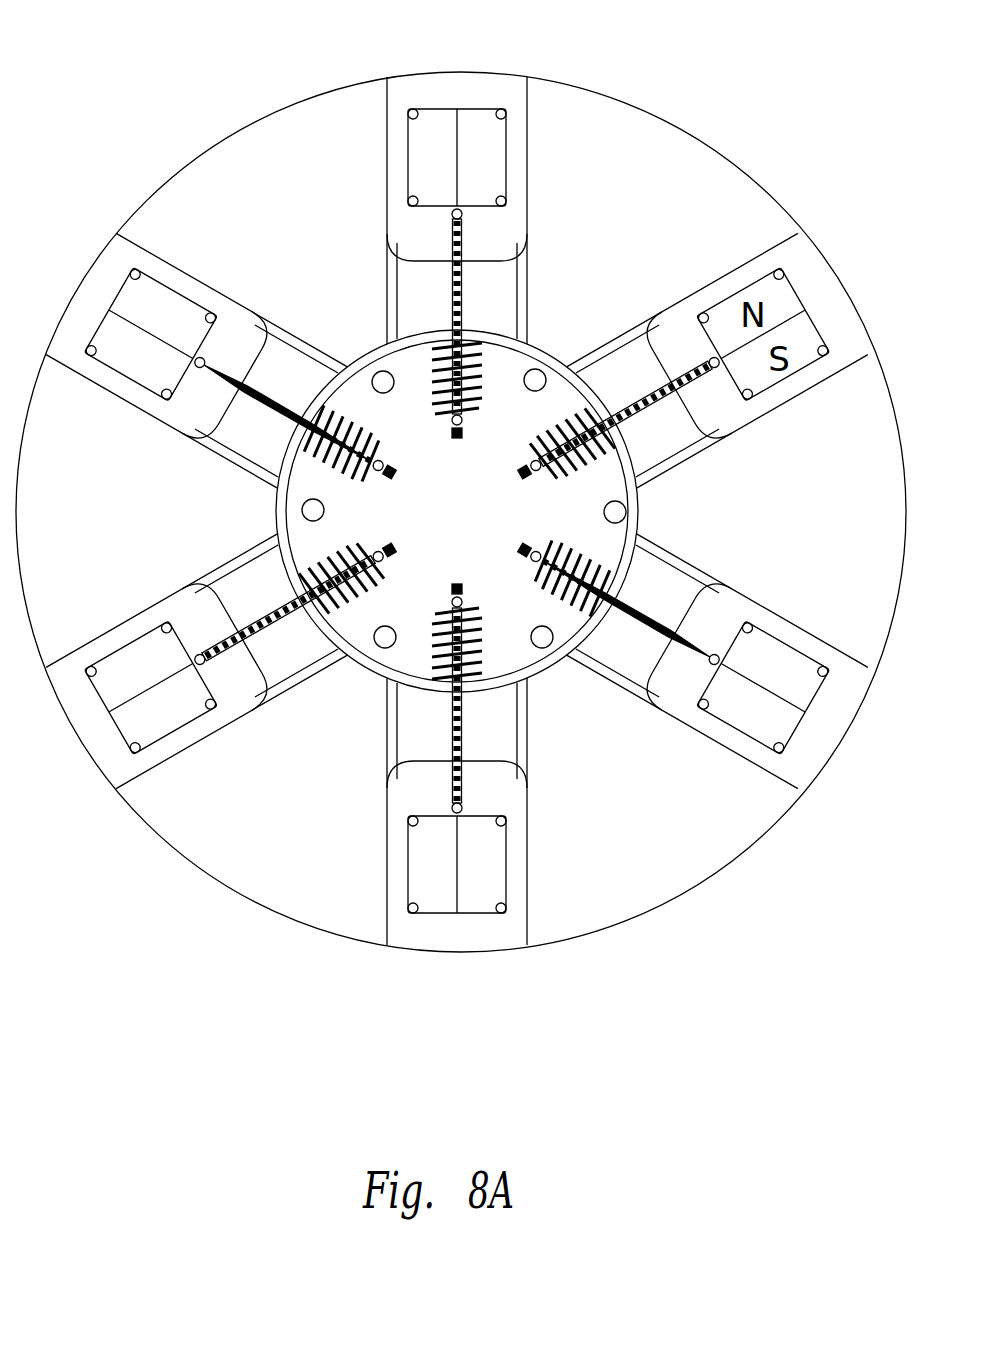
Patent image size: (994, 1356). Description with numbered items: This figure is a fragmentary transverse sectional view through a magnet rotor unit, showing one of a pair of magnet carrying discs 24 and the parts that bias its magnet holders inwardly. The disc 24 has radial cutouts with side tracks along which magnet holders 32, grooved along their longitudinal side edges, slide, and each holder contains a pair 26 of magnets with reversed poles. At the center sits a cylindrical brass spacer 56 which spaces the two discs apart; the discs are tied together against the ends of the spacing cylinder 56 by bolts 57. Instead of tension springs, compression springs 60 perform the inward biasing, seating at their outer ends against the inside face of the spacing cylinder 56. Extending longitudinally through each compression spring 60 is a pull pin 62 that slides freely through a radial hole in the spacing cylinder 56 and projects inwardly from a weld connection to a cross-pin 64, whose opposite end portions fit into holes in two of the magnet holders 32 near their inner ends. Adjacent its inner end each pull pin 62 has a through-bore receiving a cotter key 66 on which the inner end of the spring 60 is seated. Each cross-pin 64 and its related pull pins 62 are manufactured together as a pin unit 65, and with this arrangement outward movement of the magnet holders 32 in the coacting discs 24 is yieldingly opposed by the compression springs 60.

The magnet carrying disc 24 is at (648, 125).
The magnet holder 32 is at (476, 90).
The pair of magnets 26 is at (497, 167).
The pin unit 65 is at (452, 214).
The pull pin 62 is at (461, 290).
The cylindrical brass spacer 56 is at (543, 353).
The bolt 57 is at (370, 373).
The compression spring 60 is at (483, 378).
The cotter key 66 is at (453, 431).
The cross-pin 64 is at (397, 479).